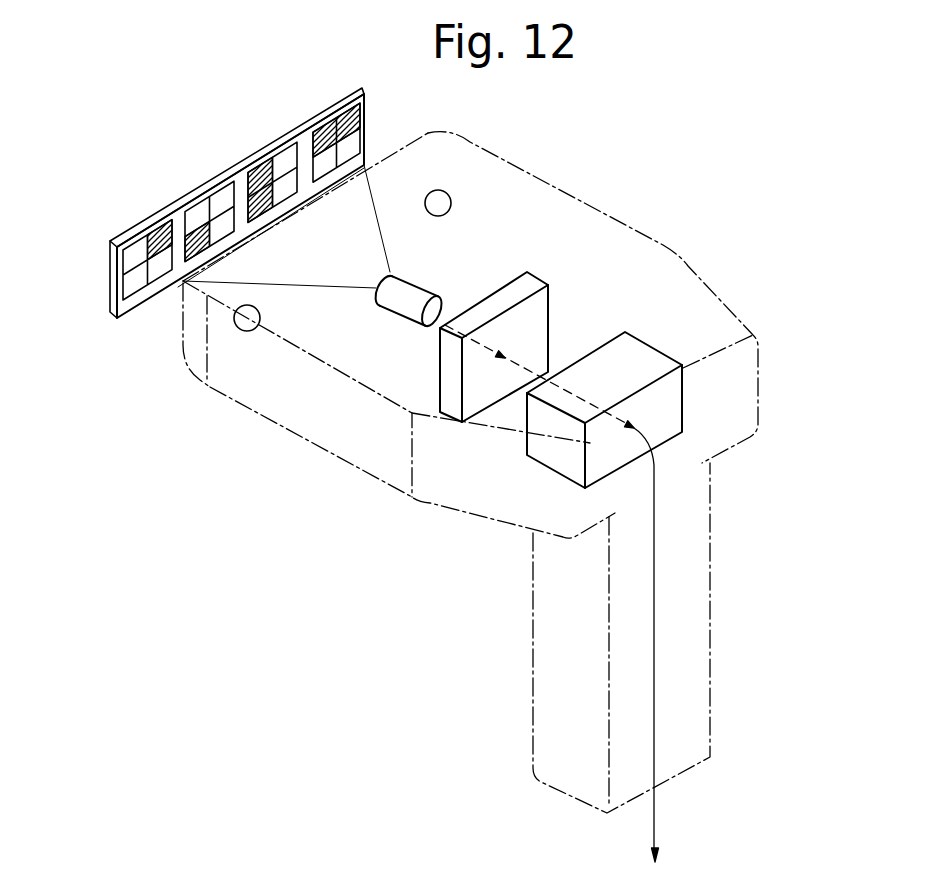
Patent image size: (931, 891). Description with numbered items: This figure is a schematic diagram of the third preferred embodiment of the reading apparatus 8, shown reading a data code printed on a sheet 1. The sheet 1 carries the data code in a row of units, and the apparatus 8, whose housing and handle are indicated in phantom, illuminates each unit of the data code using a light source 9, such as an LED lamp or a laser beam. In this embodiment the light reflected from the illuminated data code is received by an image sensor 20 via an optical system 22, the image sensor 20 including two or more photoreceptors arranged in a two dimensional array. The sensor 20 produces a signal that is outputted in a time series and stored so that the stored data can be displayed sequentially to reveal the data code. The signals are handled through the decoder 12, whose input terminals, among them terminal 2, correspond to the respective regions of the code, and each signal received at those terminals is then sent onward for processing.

The sheet 1 is at (228, 195).
The input terminal 2 is at (163, 216).
The apparatus 8 is at (760, 382).
The light source 9 is at (448, 197).
The decoder 12 is at (653, 358).
The image sensor 20 is at (548, 306).
The optical system 22 is at (423, 296).